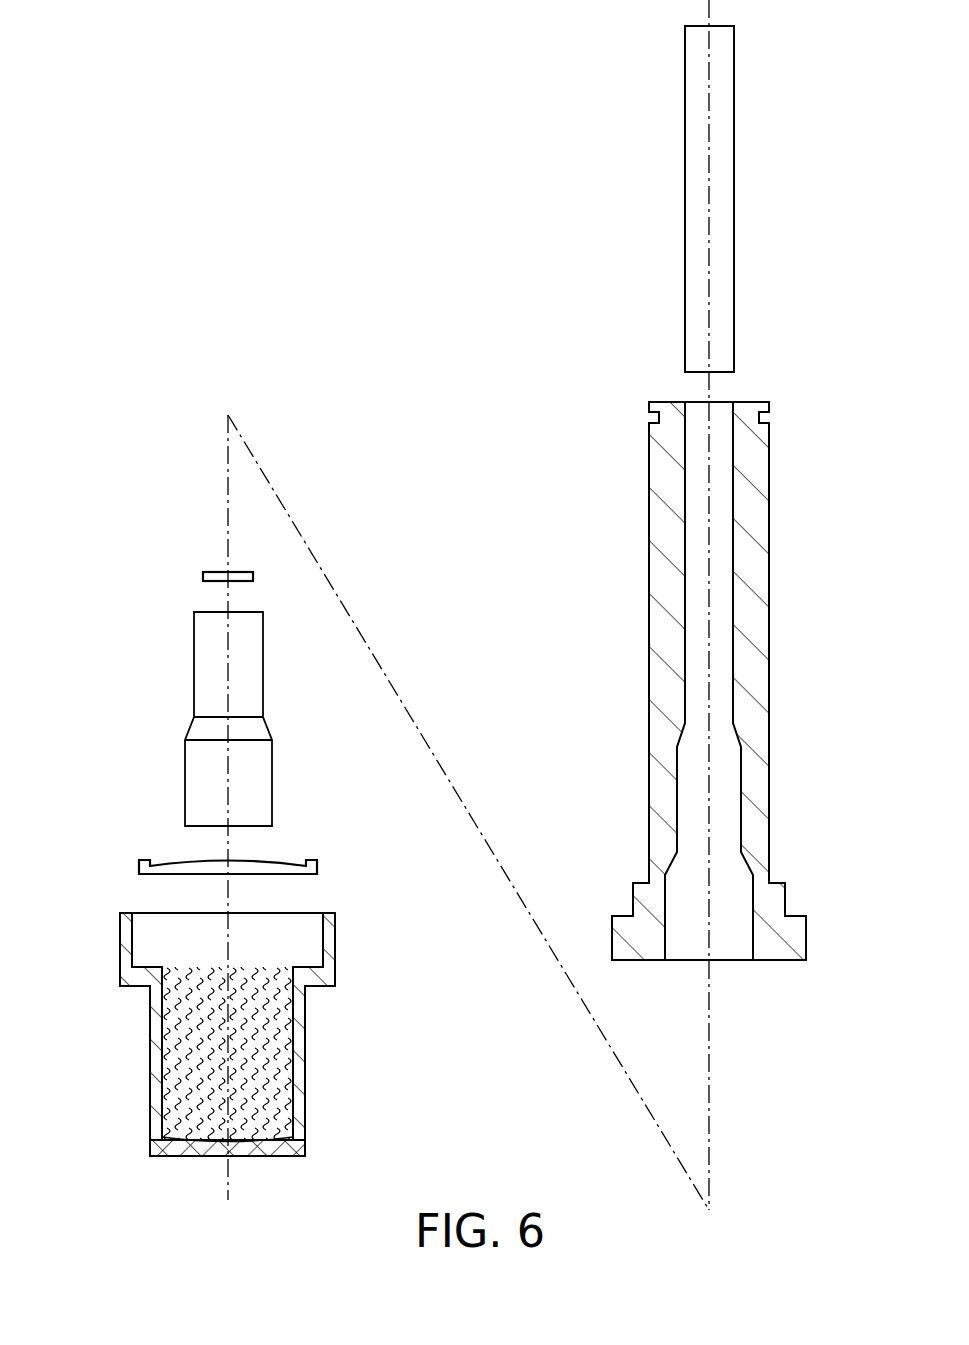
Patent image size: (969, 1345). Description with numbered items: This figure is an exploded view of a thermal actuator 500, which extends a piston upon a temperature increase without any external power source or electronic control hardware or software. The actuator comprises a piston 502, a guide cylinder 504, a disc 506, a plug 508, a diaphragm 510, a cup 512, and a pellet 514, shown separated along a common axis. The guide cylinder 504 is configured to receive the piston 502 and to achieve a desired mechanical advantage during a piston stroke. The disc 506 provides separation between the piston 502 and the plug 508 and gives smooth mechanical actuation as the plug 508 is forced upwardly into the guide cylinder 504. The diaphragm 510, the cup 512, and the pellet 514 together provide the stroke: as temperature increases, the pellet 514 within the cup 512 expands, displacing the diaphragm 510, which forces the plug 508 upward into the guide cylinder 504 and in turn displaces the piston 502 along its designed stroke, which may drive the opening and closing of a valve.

The thermal actuator 500 is at (207, 193).
The piston 502 is at (683, 295).
The guide cylinder 504 is at (648, 618).
The disc 506 is at (203, 572).
The plug 508 is at (194, 668).
The diaphragm 510 is at (187, 863).
The cup 512 is at (120, 975).
The pellet 514 is at (277, 1042).